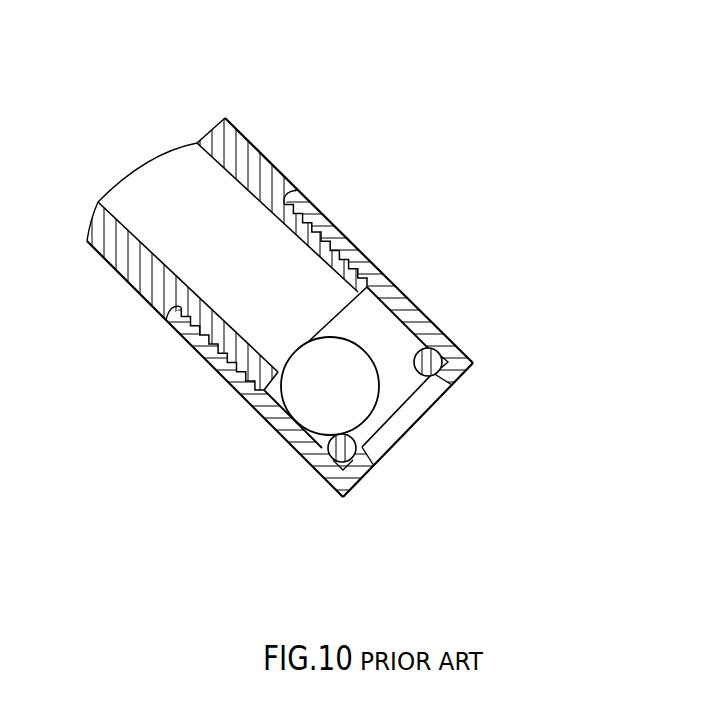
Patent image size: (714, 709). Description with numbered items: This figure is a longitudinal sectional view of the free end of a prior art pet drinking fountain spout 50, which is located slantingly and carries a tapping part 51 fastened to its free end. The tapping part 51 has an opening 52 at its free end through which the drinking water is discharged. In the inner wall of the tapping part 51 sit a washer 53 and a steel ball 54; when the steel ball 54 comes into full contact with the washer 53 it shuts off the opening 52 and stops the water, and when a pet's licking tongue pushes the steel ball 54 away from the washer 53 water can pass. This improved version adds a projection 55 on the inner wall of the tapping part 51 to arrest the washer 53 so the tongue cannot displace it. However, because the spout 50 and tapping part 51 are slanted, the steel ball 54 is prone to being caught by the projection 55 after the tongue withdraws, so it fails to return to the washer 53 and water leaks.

The spout 50 is at (255, 140).
The tapping part 51 is at (433, 318).
The opening 52 is at (427, 403).
The washer 53 is at (357, 446).
The steel ball 54 is at (295, 402).
The projection 55 is at (303, 453).